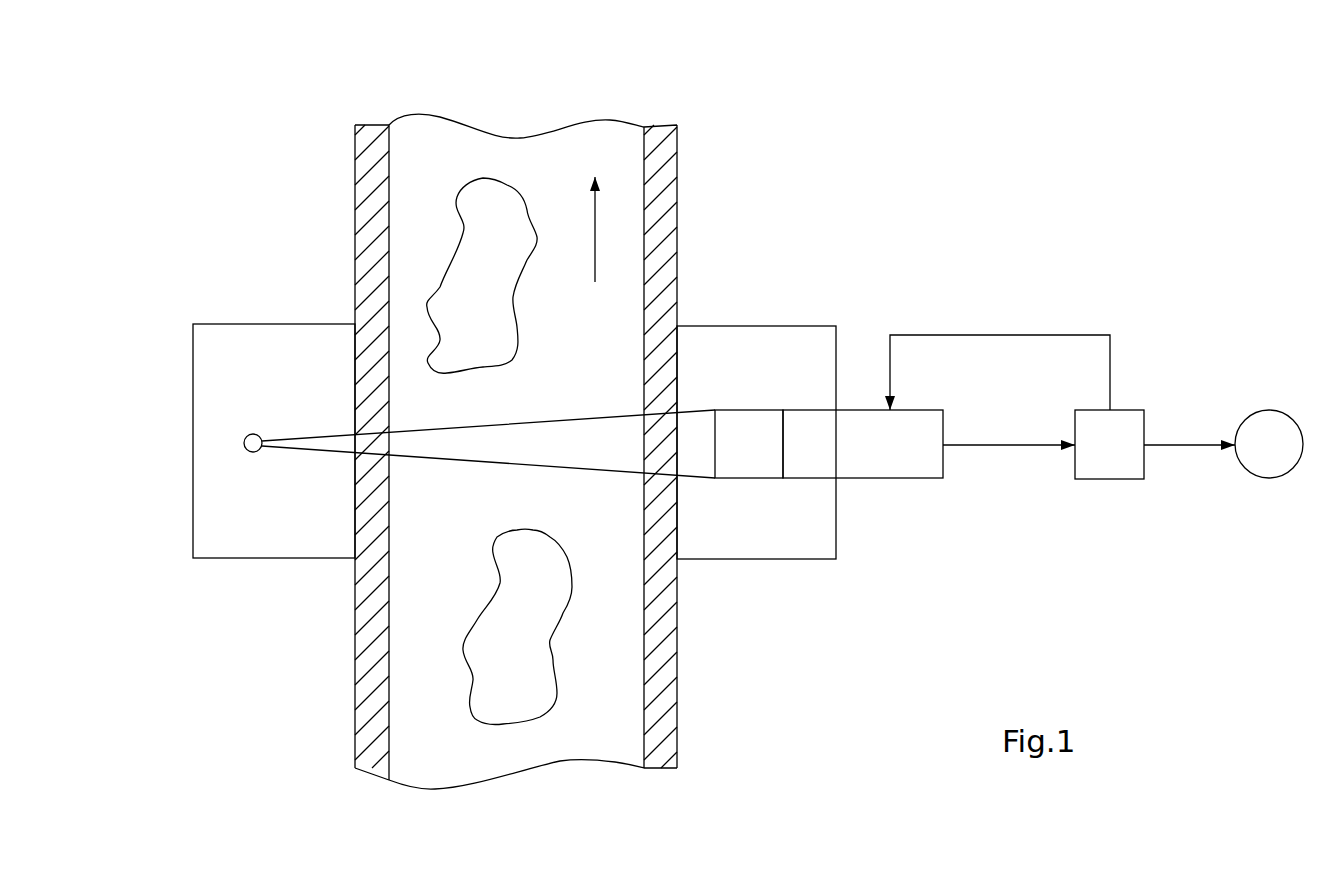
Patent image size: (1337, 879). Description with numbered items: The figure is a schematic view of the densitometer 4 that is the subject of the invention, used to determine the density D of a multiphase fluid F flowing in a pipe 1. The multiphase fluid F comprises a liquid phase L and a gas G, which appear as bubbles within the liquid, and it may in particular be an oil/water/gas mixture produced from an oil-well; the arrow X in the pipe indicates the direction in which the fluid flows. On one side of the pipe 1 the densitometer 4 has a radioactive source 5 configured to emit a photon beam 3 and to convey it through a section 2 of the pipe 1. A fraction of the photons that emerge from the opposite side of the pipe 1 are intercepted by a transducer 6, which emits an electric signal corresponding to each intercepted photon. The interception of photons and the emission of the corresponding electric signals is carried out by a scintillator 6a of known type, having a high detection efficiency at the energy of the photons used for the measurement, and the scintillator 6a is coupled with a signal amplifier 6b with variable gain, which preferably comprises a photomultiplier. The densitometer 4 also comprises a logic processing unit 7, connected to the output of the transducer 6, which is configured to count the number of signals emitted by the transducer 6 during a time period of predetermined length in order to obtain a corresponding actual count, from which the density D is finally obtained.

The pipe 1 is at (353, 194).
The section 2 is at (602, 493).
The photon beam 3 is at (582, 442).
The densitometer 4 is at (933, 152).
The radioactive source 5 is at (240, 452).
The transducer 6 is at (845, 550).
The scintillator 6a is at (743, 459).
The signal amplifier 6b is at (913, 452).
The logic processing unit 7 is at (1106, 482).
The density D is at (1269, 444).
The flow direction X is at (595, 235).
The multiphase fluid F is at (440, 521).
The liquid phase L is at (435, 573).
The gas G is at (507, 643).